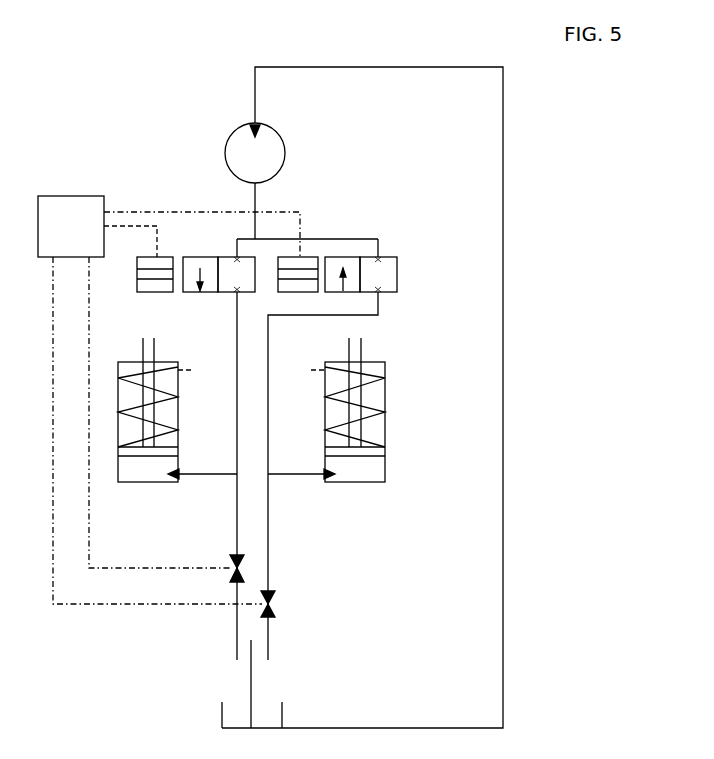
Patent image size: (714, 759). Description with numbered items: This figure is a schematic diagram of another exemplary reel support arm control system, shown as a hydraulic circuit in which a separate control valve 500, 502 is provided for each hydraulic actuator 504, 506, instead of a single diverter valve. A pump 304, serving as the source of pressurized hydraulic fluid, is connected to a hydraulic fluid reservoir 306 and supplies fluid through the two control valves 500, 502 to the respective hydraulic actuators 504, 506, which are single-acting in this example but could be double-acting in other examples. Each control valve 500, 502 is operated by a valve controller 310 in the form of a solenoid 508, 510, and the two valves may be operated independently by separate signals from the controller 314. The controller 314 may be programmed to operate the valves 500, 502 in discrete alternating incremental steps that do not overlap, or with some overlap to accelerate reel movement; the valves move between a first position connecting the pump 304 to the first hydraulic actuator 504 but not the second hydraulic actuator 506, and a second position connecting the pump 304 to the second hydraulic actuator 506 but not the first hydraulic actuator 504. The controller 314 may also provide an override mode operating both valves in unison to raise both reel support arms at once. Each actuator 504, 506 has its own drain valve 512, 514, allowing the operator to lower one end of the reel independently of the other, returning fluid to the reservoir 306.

The valve controller 310 is at (91, 120).
The controller 314 is at (68, 214).
The pump 304 is at (279, 153).
The control valve 500 is at (228, 262).
The control valve 502 is at (354, 258).
The solenoid 508 is at (155, 292).
The solenoid 510 is at (298, 292).
The hydraulic actuator 504 is at (143, 470).
The hydraulic actuator 506 is at (357, 465).
The drain valve 512 is at (232, 574).
The drain valve 514 is at (278, 606).
The hydraulic fluid reservoir 306 is at (219, 725).